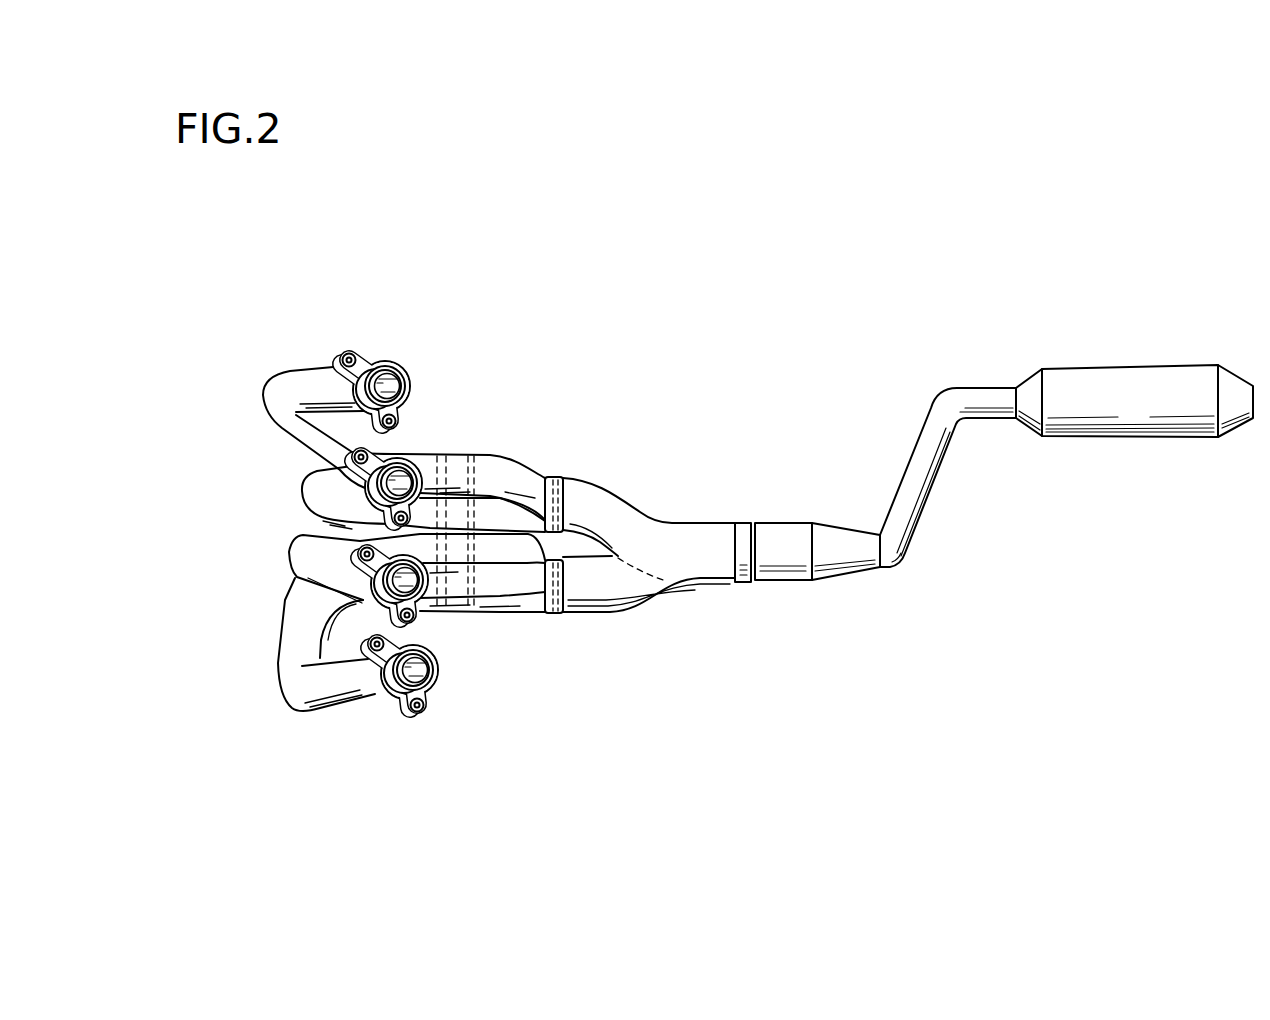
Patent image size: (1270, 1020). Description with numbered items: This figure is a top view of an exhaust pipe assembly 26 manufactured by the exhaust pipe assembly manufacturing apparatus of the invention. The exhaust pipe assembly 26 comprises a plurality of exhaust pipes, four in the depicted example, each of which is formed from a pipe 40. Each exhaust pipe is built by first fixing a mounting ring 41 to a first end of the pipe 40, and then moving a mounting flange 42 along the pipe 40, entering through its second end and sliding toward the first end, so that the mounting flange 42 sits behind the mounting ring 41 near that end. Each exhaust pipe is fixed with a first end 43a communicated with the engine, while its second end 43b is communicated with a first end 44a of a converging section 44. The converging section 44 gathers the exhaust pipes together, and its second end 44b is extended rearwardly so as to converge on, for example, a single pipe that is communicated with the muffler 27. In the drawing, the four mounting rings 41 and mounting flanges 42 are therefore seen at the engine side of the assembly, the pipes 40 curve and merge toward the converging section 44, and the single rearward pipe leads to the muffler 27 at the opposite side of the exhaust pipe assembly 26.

The exhaust pipe assembly 26 is at (1081, 292).
The muffler 27 is at (1130, 376).
The pipe 40 is at (303, 482).
The mounting ring 41 is at (373, 378).
The mounting flange 42 is at (359, 455).
The first end 43a is at (400, 483).
The second end 43b is at (741, 535).
The converging section 44 is at (792, 572).
The first end 44a is at (736, 567).
The second end 44b is at (1027, 384).